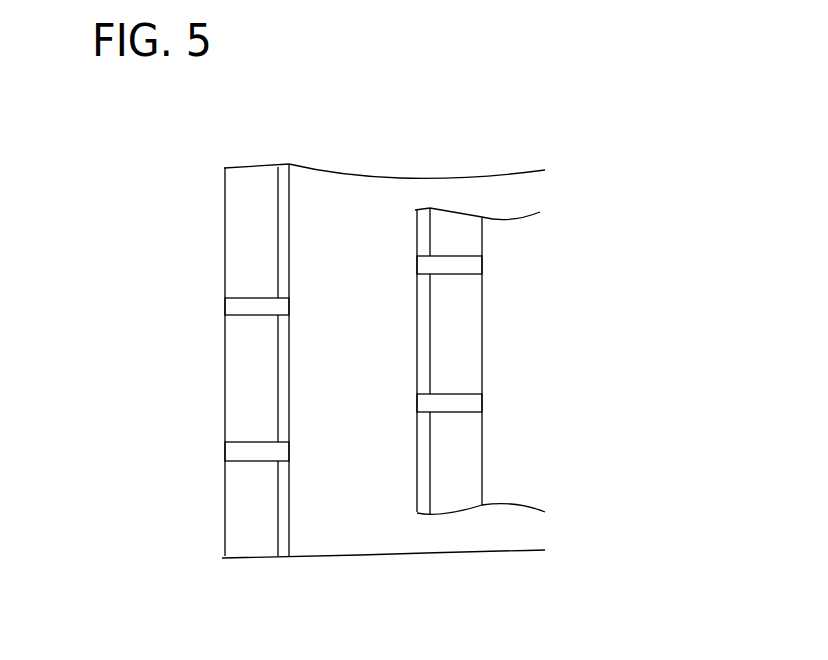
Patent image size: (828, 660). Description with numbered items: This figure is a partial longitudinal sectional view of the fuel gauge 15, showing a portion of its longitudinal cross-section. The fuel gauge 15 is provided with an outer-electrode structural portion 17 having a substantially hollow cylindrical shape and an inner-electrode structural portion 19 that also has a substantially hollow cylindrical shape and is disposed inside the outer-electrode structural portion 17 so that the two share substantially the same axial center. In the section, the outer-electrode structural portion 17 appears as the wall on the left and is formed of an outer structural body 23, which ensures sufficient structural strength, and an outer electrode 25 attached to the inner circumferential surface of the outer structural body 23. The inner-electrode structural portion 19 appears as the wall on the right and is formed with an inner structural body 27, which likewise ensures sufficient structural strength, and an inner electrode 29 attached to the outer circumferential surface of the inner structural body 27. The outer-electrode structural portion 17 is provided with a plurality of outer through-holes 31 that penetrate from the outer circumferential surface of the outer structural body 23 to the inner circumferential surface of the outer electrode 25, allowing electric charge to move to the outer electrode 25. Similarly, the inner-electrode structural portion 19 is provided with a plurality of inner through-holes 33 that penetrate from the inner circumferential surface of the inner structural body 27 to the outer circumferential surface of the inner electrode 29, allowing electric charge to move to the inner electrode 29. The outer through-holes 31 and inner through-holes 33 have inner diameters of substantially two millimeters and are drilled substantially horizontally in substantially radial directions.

The fuel gauge 15 is at (528, 121).
The outer-electrode structural portion 17 is at (253, 306).
The inner-electrode structural portion 19 is at (457, 309).
The outer structural body 23 is at (224, 206).
The outer electrode 25 is at (292, 217).
The inner structural body 27 is at (484, 357).
The inner electrode 29 is at (416, 352).
The outer through-holes 31 is at (240, 303).
The inner through-holes 33 is at (470, 264).